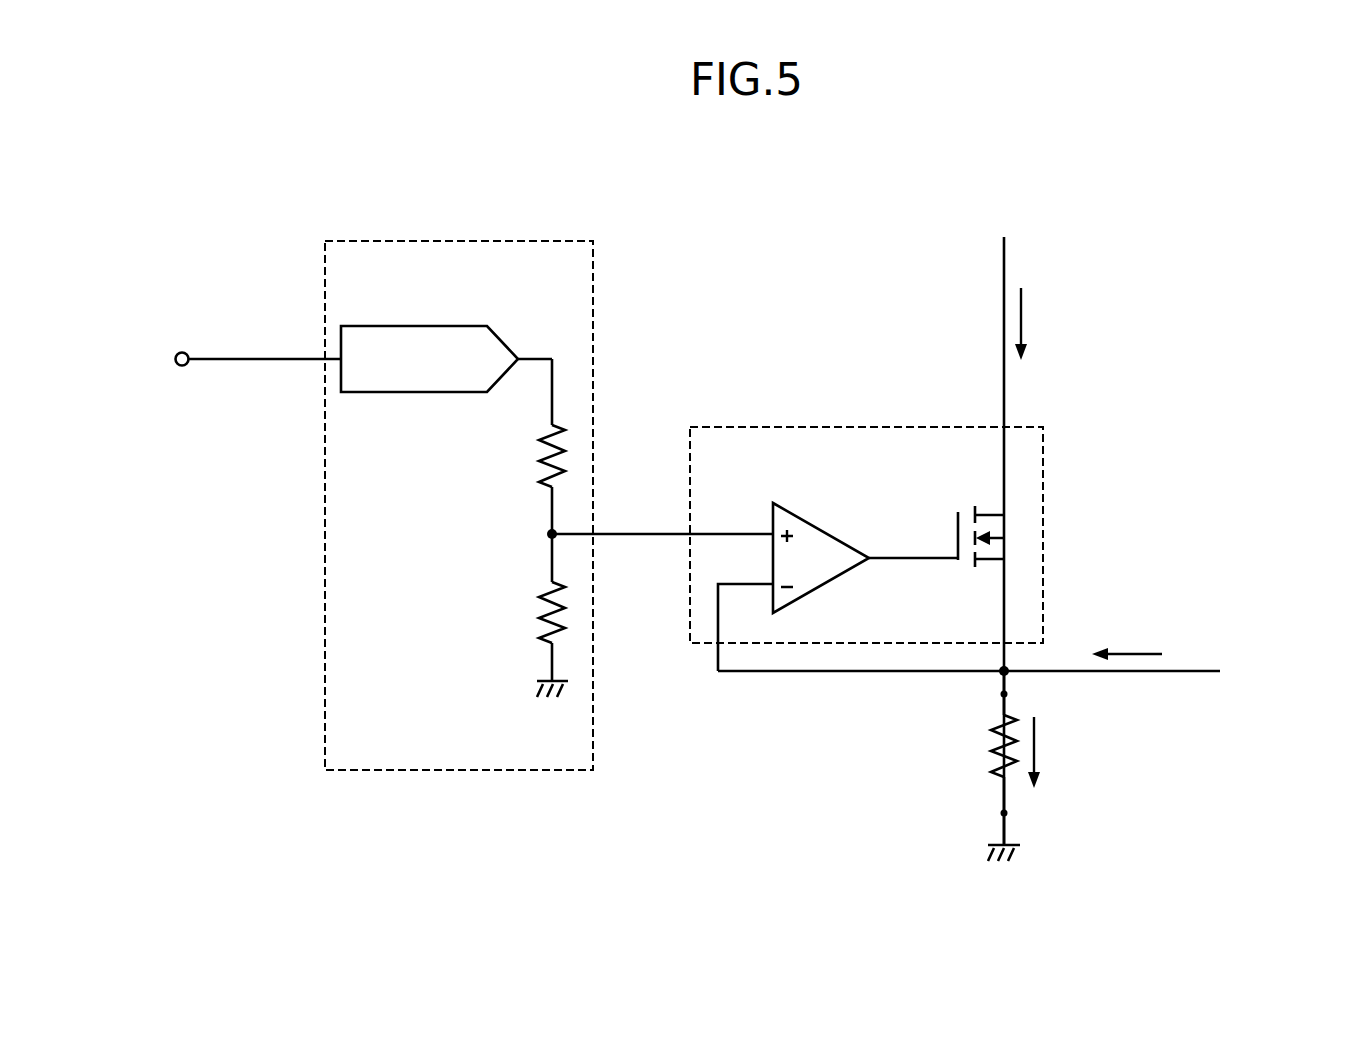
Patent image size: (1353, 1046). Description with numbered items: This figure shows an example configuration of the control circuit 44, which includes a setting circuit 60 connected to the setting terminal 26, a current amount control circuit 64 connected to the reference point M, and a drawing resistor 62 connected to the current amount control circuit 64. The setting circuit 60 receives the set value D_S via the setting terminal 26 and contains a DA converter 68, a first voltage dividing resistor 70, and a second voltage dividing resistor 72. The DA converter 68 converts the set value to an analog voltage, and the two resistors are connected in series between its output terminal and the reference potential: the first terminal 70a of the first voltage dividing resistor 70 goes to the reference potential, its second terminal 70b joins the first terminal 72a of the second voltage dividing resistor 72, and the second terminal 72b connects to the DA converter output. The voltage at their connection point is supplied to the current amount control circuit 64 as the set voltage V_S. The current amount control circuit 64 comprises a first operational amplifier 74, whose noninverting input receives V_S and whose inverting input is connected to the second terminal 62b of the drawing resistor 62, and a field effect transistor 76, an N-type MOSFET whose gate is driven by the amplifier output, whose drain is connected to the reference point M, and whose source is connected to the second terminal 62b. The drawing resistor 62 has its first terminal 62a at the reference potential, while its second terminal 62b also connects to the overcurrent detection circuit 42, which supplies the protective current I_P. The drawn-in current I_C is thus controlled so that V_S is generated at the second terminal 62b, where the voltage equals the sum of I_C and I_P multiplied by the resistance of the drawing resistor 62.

The setting terminal 26 is at (181, 352).
The control circuit 44 is at (828, 211).
The setting circuit 60 is at (513, 240).
The DA converter 68 is at (500, 341).
The second voltage dividing resistor 72 is at (545, 453).
The first terminal 72a is at (552, 512).
The second terminal 72b is at (552, 403).
The first voltage dividing resistor 70 is at (545, 625).
The first terminal 70a is at (552, 660).
The second terminal 70b is at (552, 566).
The current amount control circuit 64 is at (915, 427).
The first operational amplifier 74 is at (837, 535).
The field effect transistor 76 is at (957, 535).
The overcurrent detection circuit 42 is at (1012, 674).
The drawing resistor 62 is at (995, 745).
The first terminal 62a is at (1010, 812).
The second terminal 62b is at (1010, 692).